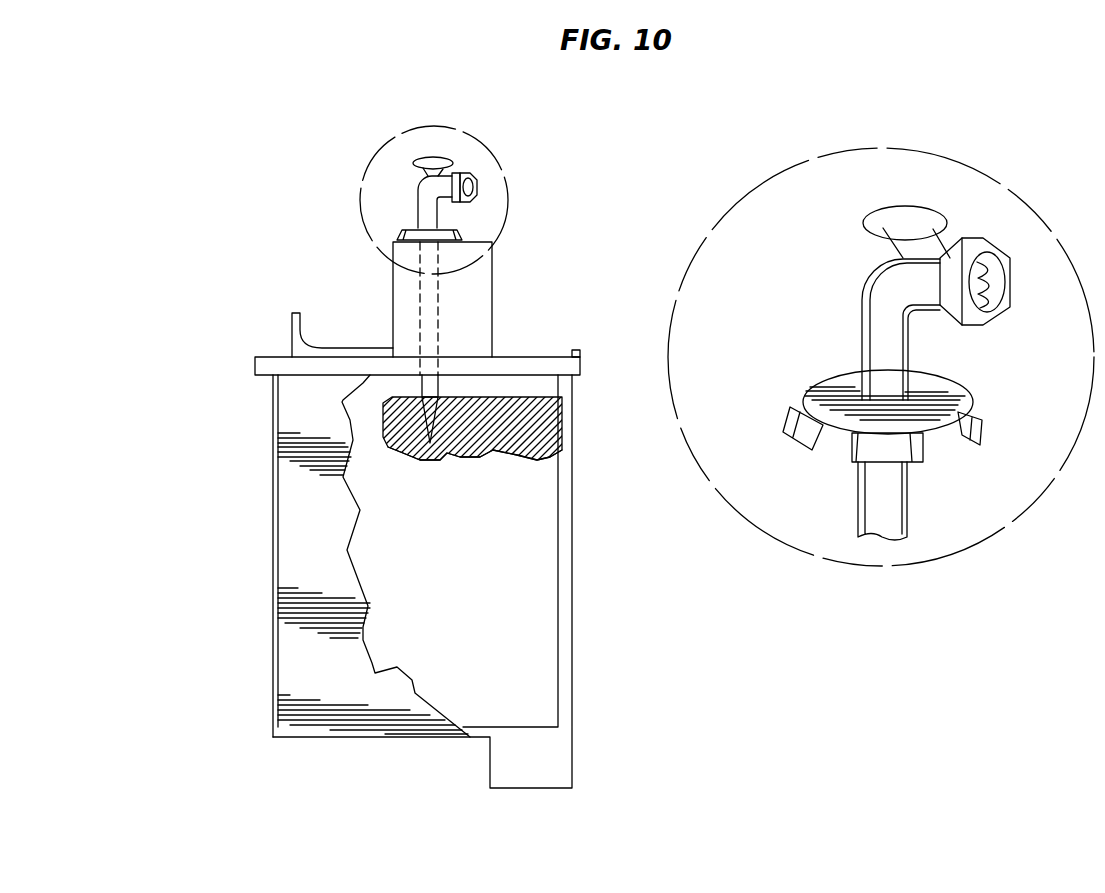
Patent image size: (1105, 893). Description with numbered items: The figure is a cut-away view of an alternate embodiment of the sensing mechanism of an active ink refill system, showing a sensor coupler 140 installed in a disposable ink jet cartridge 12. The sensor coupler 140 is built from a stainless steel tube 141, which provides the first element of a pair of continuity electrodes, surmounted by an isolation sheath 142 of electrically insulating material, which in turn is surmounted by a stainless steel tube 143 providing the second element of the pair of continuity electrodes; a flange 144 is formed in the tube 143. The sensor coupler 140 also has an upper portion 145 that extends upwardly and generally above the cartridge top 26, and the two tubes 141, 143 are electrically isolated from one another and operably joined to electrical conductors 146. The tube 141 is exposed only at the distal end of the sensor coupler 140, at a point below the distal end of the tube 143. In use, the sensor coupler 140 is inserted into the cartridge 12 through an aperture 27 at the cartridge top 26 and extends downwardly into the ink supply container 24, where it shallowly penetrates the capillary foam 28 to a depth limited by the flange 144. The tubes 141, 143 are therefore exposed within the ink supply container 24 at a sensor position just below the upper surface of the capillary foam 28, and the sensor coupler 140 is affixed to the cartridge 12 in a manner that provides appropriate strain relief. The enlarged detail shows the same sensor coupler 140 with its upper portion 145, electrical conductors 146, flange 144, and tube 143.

The disposable ink jet cartridge 12 is at (333, 305).
The ink supply container 24 is at (290, 407).
The cartridge top 26 is at (393, 357).
The aperture 27 is at (440, 368).
The capillary foam 28 is at (513, 558).
The sensor coupler 140 is at (373, 144).
The stainless steel tube 141 is at (448, 432).
The isolation sheath 142 is at (447, 405).
The stainless steel tube 143 is at (445, 383).
The flange 144 is at (457, 233).
The upper portion 145 is at (417, 212).
The electrical conductors 146 is at (448, 165).